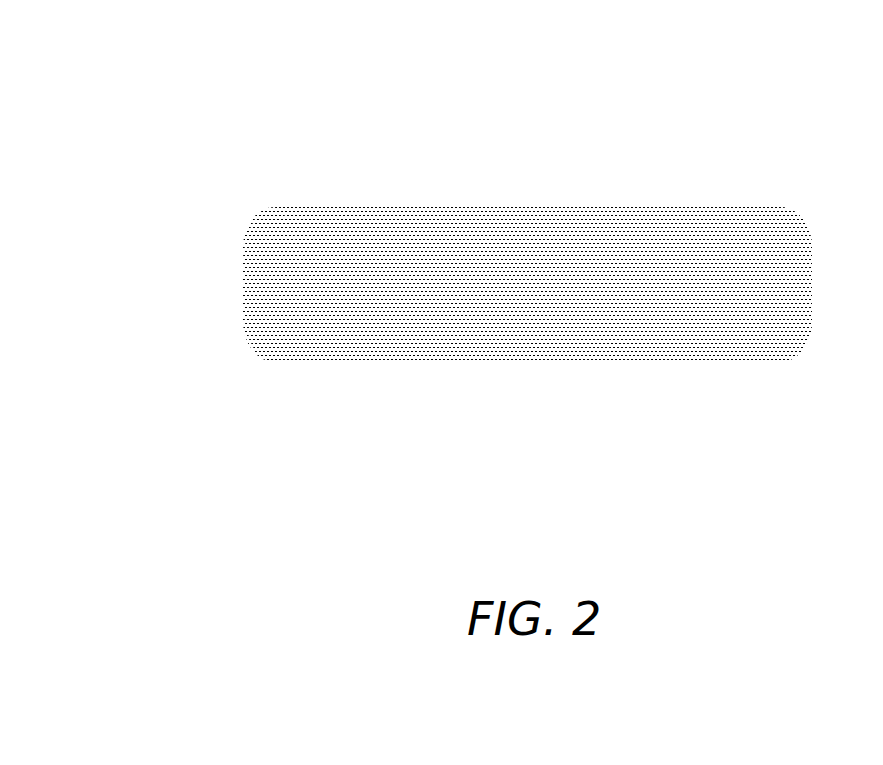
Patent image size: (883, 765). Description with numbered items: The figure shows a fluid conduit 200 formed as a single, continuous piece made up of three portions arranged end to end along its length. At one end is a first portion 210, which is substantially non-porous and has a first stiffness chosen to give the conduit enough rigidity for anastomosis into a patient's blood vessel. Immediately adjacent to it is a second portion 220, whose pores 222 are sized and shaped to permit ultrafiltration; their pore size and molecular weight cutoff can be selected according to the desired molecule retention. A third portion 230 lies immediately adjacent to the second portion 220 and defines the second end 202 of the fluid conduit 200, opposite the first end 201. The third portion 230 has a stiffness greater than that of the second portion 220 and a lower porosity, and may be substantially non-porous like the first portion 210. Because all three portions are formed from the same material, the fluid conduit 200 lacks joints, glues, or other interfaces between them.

The fluid conduit 200 is at (487, 259).
The first end 201 is at (238, 375).
The second end 202 is at (813, 375).
The first portion 210 is at (270, 193).
The second portion 220 is at (617, 193).
The pores 222 is at (547, 347).
The third portion 230 is at (782, 193).